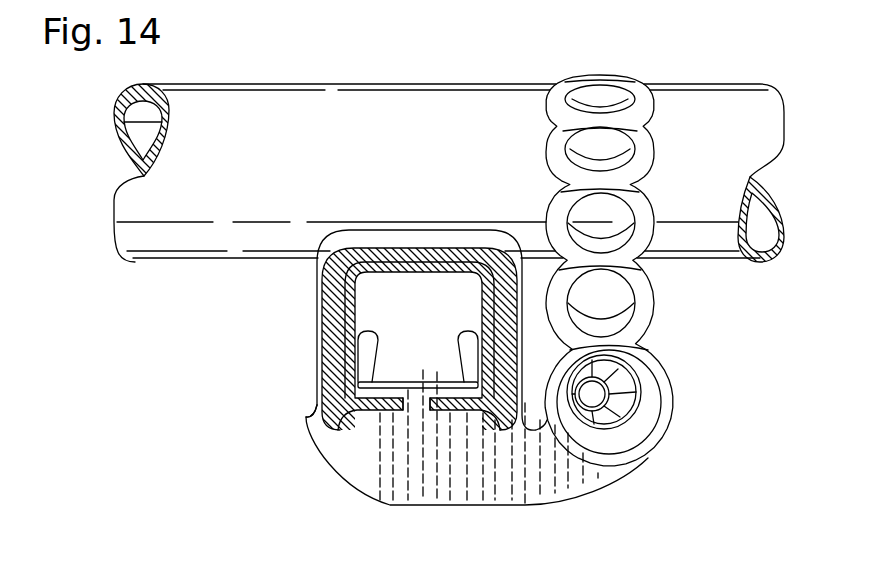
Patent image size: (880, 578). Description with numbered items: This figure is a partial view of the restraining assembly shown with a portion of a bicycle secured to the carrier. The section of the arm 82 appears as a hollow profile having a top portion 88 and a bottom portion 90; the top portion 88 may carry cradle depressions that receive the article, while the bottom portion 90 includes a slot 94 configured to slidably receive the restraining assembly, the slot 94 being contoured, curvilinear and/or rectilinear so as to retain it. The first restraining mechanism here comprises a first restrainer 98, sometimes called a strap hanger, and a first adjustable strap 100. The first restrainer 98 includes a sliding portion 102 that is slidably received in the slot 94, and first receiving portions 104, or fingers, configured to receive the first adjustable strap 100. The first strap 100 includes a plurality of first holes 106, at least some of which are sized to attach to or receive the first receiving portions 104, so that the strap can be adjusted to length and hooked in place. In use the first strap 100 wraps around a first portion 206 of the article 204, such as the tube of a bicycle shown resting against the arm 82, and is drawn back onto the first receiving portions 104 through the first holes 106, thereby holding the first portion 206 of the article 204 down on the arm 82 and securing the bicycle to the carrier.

The arm 82 is at (423, 253).
The top portion 88 is at (360, 243).
The bottom portion 90 is at (312, 394).
The slot 94 is at (413, 406).
The first restrainer 98 is at (534, 491).
The first adjustable strap 100 is at (648, 303).
The sliding portion 102 is at (372, 367).
The first receiving portions 104 is at (593, 400).
The first holes 106 is at (620, 220).
The article 204 is at (225, 106).
The first portion 206 is at (721, 106).